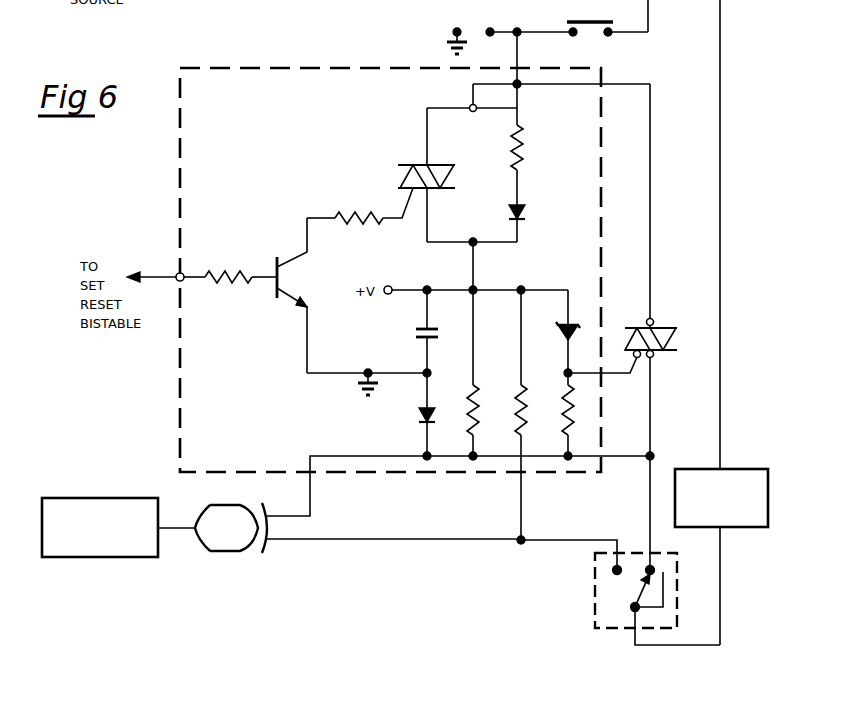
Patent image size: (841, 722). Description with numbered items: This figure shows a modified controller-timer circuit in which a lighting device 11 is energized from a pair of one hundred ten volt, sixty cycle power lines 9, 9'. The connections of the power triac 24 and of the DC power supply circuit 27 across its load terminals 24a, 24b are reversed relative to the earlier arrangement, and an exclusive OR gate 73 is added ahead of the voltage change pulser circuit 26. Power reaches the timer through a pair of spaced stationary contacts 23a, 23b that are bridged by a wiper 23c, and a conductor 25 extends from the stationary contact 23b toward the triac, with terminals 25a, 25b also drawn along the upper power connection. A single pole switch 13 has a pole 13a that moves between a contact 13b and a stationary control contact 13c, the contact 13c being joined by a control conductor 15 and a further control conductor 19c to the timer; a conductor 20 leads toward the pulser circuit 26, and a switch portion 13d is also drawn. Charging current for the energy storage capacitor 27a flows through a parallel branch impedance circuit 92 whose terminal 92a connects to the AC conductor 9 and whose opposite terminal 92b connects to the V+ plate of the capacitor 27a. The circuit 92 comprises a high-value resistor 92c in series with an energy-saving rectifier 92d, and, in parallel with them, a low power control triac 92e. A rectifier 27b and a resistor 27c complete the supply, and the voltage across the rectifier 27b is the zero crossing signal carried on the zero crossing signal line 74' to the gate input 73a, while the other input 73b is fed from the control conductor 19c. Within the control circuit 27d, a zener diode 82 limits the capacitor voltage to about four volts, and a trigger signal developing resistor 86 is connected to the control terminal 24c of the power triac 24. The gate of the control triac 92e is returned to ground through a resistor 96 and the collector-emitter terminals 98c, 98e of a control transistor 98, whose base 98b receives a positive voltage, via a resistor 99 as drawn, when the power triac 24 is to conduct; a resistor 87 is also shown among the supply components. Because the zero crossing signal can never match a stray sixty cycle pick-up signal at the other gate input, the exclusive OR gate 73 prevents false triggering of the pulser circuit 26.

The power line 9 is at (661, 16).
The power line 9' is at (736, 322).
The lighting device 11 is at (770, 478).
The single pole switch 13 is at (594, 620).
The pole 13a is at (634, 596).
The contact 13b is at (655, 566).
The stationary control contact 13c is at (612, 572).
The switch wire 13d is at (668, 582).
The control conductor 15 is at (543, 538).
The control conductor 19c is at (404, 542).
The conductor 20 is at (617, 552).
The stationary contact 23a is at (608, 36).
The stationary contact 23b is at (573, 36).
The wiper 23c is at (592, 20).
The power triac 24 is at (630, 325).
The load terminal 24a is at (652, 358).
The load terminal 24b is at (654, 320).
The control terminal 24c is at (638, 358).
The conductor 25 is at (666, 203).
The terminal 25a is at (490, 28).
The ground terminal 25b is at (457, 28).
The voltage change pulser circuit 26 is at (94, 497).
The DC power supply circuit 27 is at (172, 187).
The capacitor 27a is at (432, 328).
The rectifier 27b is at (432, 416).
The resistor 27c is at (480, 394).
The control circuit 27d is at (373, 168).
The exclusive OR gate 73 is at (228, 503).
The input 73a is at (267, 513).
The input 73b is at (268, 544).
The zero crossing signal line 74' is at (457, 469).
The zener diode 82 is at (573, 320).
The resistor 86 is at (576, 418).
The resistor 87 is at (529, 394).
The parallel branch impedance circuit 92 is at (486, 153).
The terminal 92a is at (471, 104).
The terminal 92b is at (477, 246).
The resistor 92c is at (525, 132).
The energy-saving rectifier 92d is at (527, 212).
The control triac 92e is at (405, 163).
The resistor 96 is at (358, 214).
The control transistor 98 is at (270, 262).
The base 98b is at (272, 285).
The collector terminal 98c is at (299, 258).
The emitter terminal 98e is at (296, 306).
The resistor 99 is at (214, 272).